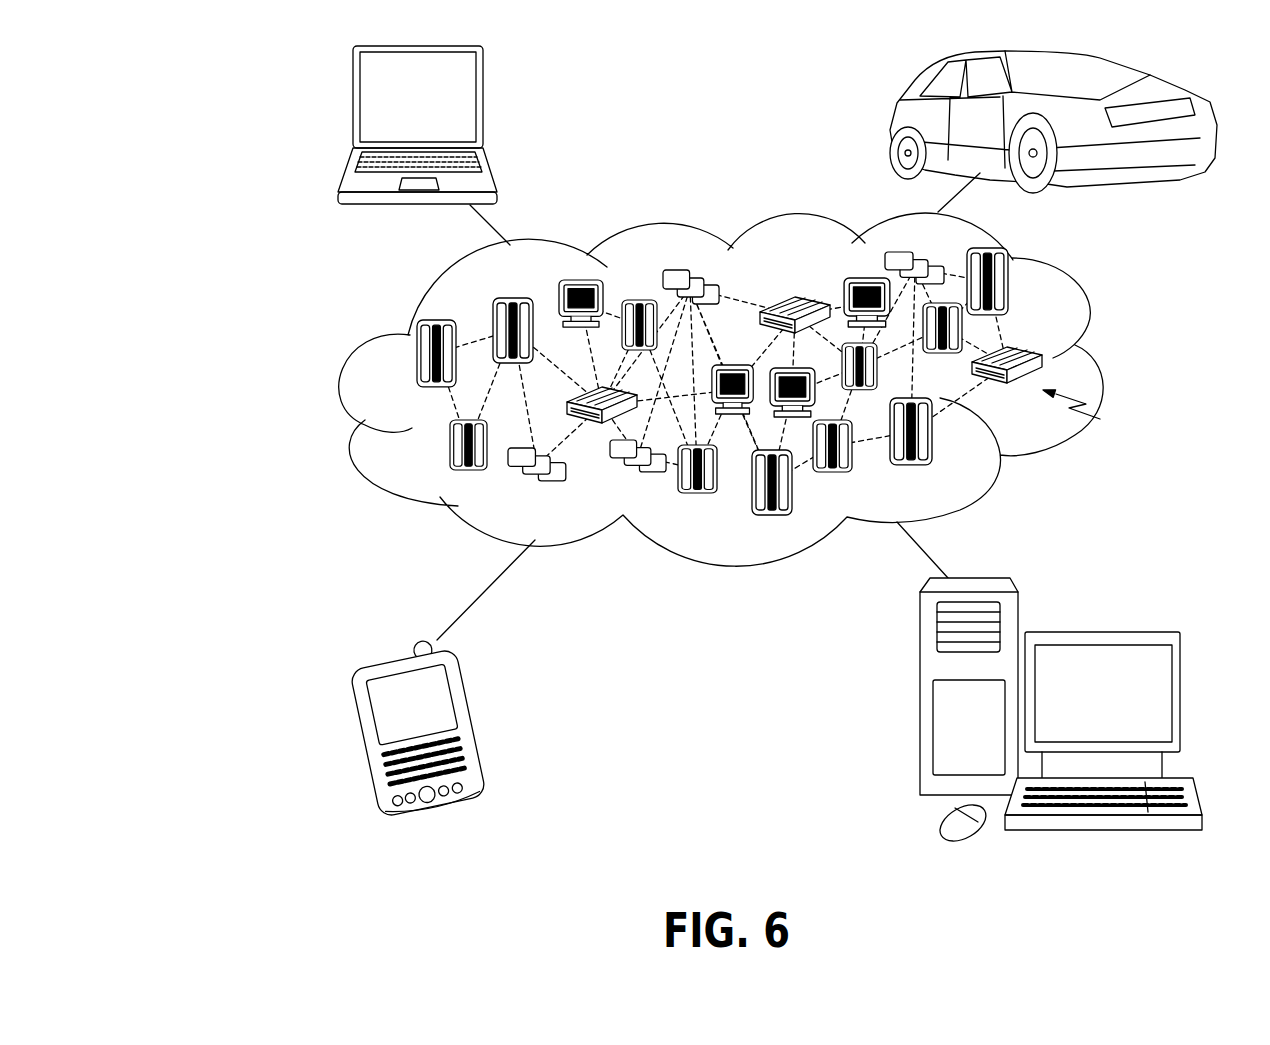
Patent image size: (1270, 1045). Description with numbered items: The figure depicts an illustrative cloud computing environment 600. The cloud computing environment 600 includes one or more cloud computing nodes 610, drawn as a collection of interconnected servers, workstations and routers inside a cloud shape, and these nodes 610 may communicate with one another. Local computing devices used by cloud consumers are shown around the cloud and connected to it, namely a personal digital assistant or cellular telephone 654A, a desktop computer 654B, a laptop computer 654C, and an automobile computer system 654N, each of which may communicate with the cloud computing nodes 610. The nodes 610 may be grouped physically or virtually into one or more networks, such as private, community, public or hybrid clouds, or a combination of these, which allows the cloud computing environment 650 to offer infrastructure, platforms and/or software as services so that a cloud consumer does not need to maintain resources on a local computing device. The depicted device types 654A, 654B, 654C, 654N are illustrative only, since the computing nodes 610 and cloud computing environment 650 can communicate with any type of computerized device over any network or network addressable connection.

The cloud computing environment 600 is at (198, 74).
The cloud computing environment 650 is at (1100, 362).
The cloud computing nodes 610 is at (1098, 413).
The personal digital assistant or cellular telephone 654A is at (470, 722).
The desktop computer 654B is at (1100, 632).
The laptop computer 654C is at (484, 105).
The automobile computer system 654N is at (892, 126).